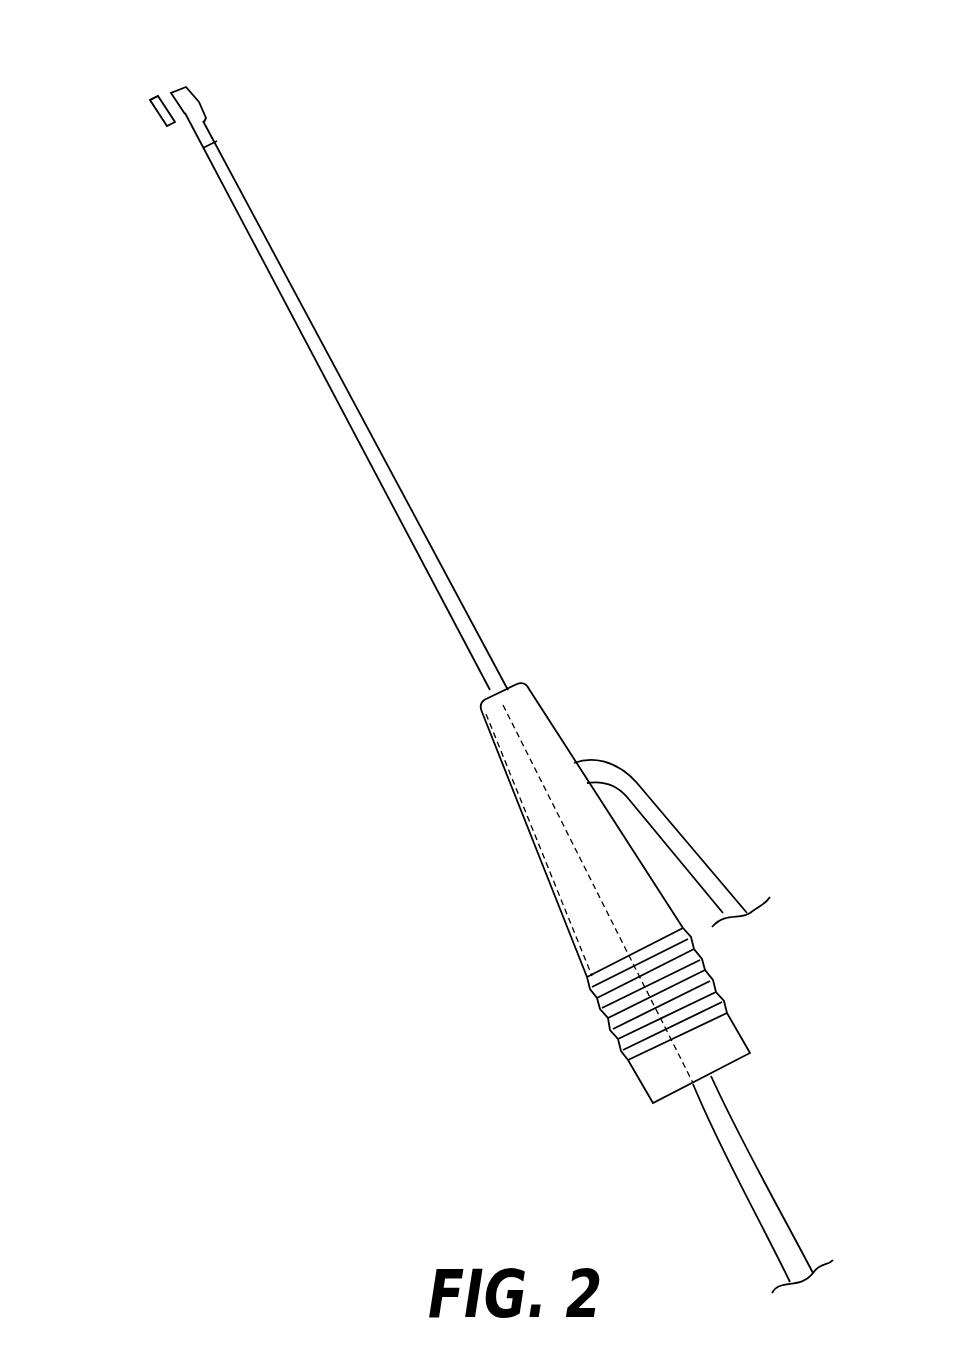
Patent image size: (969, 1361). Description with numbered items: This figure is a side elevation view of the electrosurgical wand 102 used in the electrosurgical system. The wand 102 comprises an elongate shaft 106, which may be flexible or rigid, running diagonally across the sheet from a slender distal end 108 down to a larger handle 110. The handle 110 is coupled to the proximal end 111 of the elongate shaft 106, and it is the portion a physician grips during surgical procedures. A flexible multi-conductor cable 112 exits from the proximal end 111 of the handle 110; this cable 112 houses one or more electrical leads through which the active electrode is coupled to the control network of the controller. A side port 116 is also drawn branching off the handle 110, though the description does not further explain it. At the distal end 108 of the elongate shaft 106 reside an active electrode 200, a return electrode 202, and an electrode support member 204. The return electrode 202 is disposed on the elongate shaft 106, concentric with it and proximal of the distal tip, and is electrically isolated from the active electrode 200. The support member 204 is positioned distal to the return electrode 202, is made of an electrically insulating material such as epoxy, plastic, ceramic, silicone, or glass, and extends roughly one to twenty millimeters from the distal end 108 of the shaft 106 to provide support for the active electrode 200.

The electrosurgical wand 102 is at (178, 262).
The elongate shaft 106 is at (390, 463).
The distal end 108 is at (157, 89).
The handle 110 is at (532, 782).
The proximal end 111 is at (728, 1070).
The flexible multi-conductor cable 112 is at (761, 1173).
The side port 116 is at (684, 832).
The active electrode 200 is at (160, 115).
The return electrode 202 is at (205, 121).
The electrode support member 204 is at (172, 90).